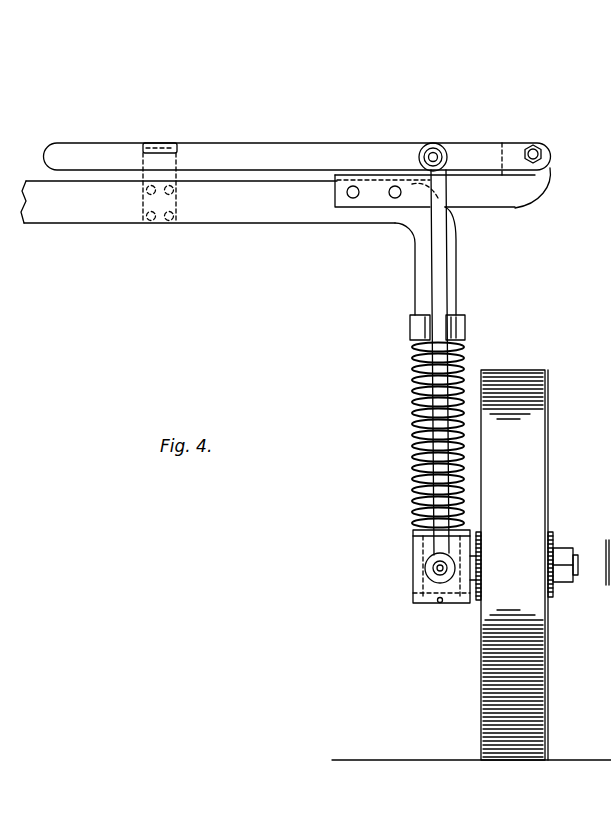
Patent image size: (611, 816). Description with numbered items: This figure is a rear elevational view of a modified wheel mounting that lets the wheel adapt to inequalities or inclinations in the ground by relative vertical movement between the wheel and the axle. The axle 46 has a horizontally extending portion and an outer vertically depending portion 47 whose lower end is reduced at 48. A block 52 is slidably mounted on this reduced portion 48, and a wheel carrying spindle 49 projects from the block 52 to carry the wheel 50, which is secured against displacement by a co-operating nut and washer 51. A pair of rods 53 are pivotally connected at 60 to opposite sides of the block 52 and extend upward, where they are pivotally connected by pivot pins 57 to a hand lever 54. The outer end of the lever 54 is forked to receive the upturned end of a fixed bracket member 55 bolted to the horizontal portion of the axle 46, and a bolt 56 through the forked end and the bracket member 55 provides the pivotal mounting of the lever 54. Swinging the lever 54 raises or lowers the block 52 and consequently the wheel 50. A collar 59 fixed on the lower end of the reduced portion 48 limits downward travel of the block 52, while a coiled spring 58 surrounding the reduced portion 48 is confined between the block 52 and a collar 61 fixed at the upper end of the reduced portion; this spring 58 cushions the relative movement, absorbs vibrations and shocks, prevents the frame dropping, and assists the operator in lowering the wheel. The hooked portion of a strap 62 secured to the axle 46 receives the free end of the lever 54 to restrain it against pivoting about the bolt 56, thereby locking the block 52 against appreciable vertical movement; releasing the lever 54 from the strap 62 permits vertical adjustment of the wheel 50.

The axle 46 is at (256, 212).
The vertically depending portion of the axle 47 is at (414, 274).
The reduced portion of the axle 48 is at (410, 391).
The wheel carrying spindle 49 is at (472, 578).
The wheel 50 is at (546, 370).
The nut and washer 51 is at (556, 545).
The block 52 is at (413, 549).
The rods 53 is at (440, 283).
The hand lever 54 is at (358, 157).
The bracket member 55 is at (507, 200).
The bolt 56 is at (544, 150).
The pivot pins 57 is at (438, 150).
The coiled spring 58 is at (411, 492).
The collar 59 is at (414, 603).
The pivotal connection 60 is at (428, 569).
The collar 61 is at (410, 324).
The strap 62 is at (157, 143).